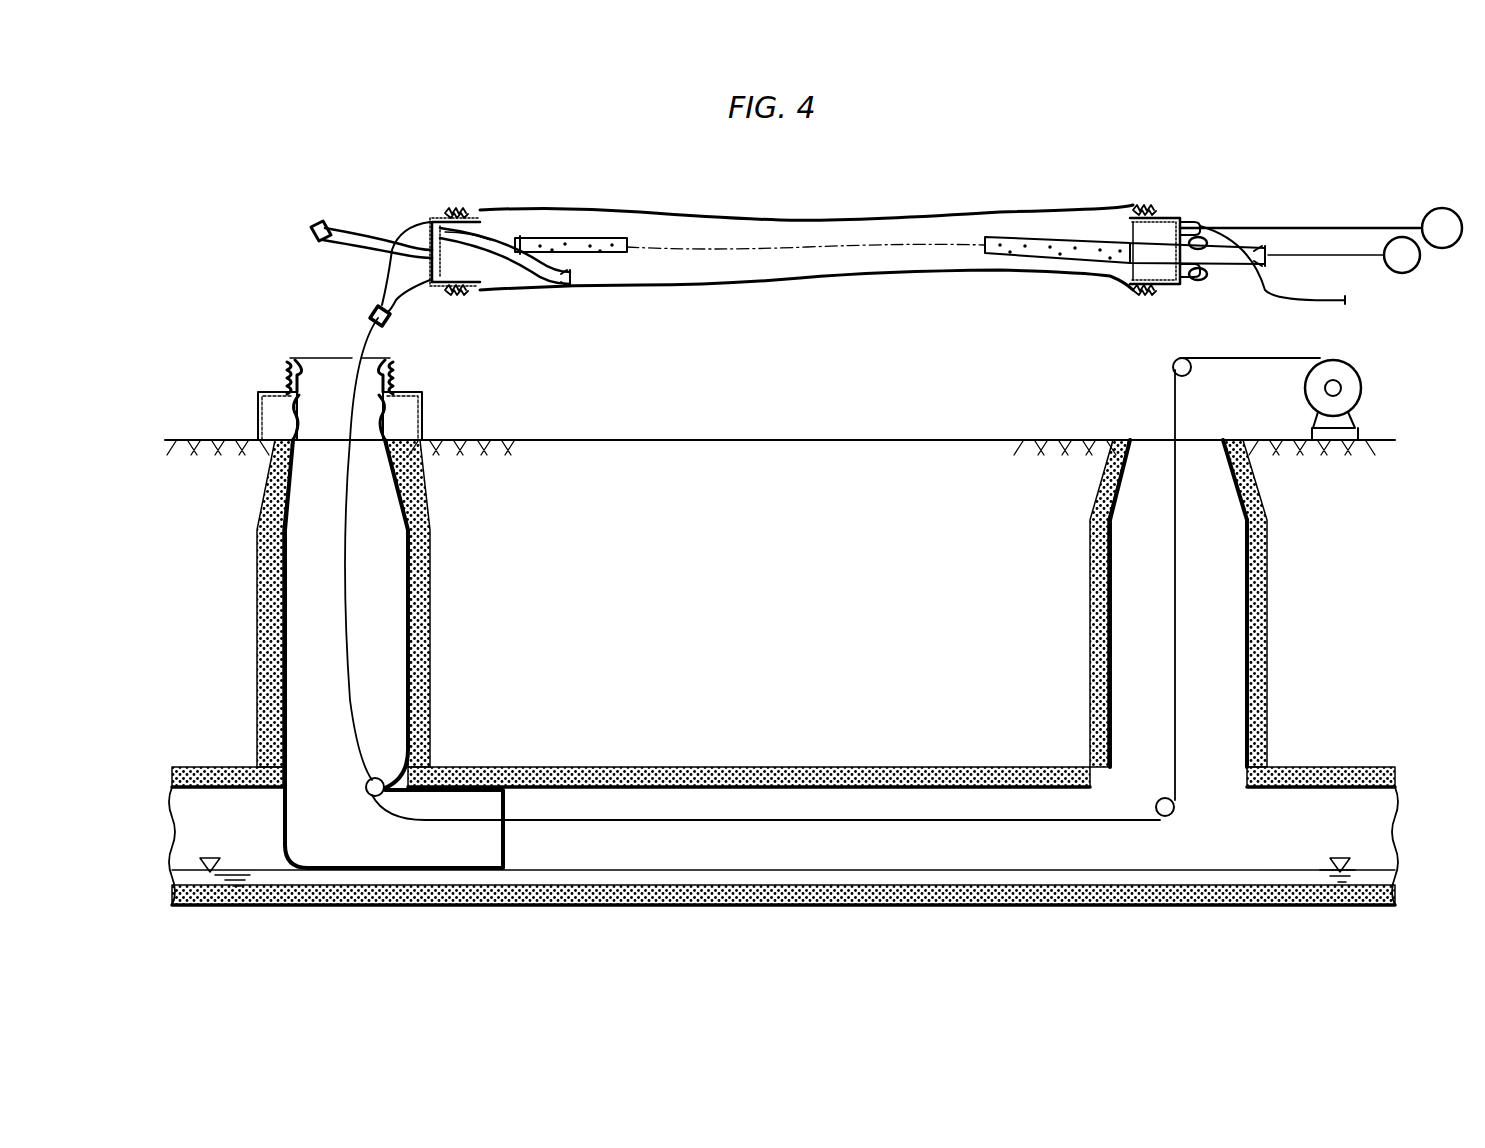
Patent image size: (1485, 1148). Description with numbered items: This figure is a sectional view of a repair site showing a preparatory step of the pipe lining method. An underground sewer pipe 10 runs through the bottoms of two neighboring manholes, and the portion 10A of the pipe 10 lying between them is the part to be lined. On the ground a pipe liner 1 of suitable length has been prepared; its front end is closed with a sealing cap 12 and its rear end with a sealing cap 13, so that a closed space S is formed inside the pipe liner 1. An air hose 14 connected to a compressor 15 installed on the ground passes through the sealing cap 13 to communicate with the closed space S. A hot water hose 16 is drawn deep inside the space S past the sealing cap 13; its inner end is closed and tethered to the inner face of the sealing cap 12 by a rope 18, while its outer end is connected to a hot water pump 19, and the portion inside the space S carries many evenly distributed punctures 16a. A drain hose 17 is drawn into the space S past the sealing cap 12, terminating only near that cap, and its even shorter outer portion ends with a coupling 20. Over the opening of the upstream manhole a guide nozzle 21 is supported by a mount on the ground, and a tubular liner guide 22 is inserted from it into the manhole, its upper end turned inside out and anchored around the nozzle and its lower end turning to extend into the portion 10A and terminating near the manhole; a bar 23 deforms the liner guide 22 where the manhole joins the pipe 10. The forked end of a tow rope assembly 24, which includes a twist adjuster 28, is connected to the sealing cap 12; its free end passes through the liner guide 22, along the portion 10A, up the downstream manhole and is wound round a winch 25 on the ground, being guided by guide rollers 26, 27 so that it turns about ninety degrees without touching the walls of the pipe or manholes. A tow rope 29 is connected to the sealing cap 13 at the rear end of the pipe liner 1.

The pipe liner 1 is at (815, 214).
The closed space S is at (745, 274).
The underground sewer pipe 10 is at (642, 906).
The portion of the pipe 10A is at (768, 766).
The sealing cap 12 is at (446, 286).
The sealing cap 13 is at (1164, 284).
The air hose 14 is at (1282, 226).
The compressor 15 is at (1436, 208).
The hot water hose 16 is at (1044, 258).
The punctures 16a is at (576, 238).
The drain hose 17 is at (540, 286).
The rope 18 is at (488, 234).
The hot water pump 19 is at (1402, 274).
The coupling 20 is at (326, 224).
The guide nozzle 21 is at (284, 386).
The tubular liner guide 22 is at (285, 625).
The bar 23 is at (370, 796).
The tow rope assembly 24 is at (346, 713).
The winch 25 is at (1362, 385).
The guide roller 26 is at (1158, 800).
The guide roller 27 is at (1186, 376).
The twist adjuster 28 is at (370, 310).
The tow rope 29 is at (1272, 296).